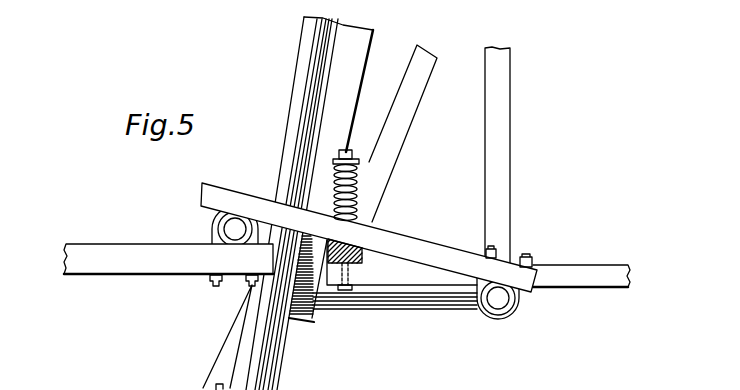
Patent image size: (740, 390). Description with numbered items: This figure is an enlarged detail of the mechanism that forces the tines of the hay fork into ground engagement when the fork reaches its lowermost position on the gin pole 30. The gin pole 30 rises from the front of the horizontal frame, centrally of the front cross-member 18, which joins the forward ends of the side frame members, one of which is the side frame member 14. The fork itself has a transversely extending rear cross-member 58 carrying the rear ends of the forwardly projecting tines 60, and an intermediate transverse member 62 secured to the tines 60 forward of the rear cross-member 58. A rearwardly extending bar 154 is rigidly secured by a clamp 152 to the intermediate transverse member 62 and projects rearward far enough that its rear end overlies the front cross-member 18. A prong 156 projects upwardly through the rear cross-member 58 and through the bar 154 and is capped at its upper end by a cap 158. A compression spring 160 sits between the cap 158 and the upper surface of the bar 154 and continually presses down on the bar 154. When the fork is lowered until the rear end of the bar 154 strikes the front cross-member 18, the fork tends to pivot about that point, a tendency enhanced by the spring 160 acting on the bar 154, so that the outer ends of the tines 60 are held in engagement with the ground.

The side frame member 14 is at (140, 267).
The front cross-member 18 is at (220, 230).
The gin pole 30 is at (296, 105).
The rear cross-member 58 is at (362, 262).
The tines 60 is at (597, 265).
The intermediate transverse member 62 is at (492, 313).
The clamps 152 is at (520, 303).
The rearwardly extending bars 154 is at (428, 243).
The prongs 156 is at (350, 242).
The cap 158 is at (356, 110).
The compression spring 160 is at (360, 183).